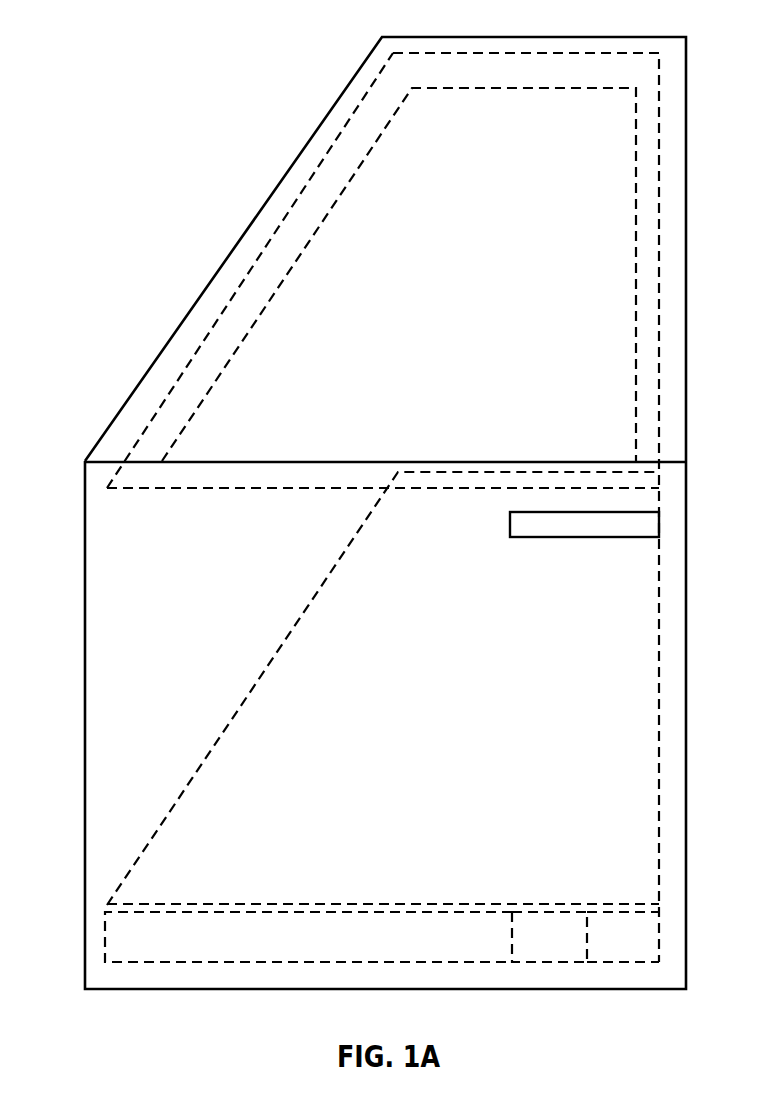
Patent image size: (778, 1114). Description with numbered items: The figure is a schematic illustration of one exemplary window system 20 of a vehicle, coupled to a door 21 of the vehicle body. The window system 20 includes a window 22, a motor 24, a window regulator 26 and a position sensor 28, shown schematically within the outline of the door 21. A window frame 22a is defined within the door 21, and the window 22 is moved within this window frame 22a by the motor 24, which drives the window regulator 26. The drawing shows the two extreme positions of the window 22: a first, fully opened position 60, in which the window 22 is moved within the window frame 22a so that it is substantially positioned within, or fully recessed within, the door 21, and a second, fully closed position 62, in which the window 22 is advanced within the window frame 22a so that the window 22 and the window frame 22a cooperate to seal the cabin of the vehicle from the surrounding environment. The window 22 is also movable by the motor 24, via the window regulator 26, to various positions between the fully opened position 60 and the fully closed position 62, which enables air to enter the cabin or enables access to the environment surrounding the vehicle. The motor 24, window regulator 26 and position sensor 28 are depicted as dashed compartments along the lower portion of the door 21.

The window system 20 is at (116, 272).
The door 21 is at (106, 617).
The window 22 is at (366, 101).
The window frame 22a is at (287, 275).
The fully closed position 62 is at (296, 178).
The fully opened position 60 is at (223, 699).
The window regulator 26 is at (324, 952).
The motor 24 is at (563, 952).
The position sensor 28 is at (638, 952).